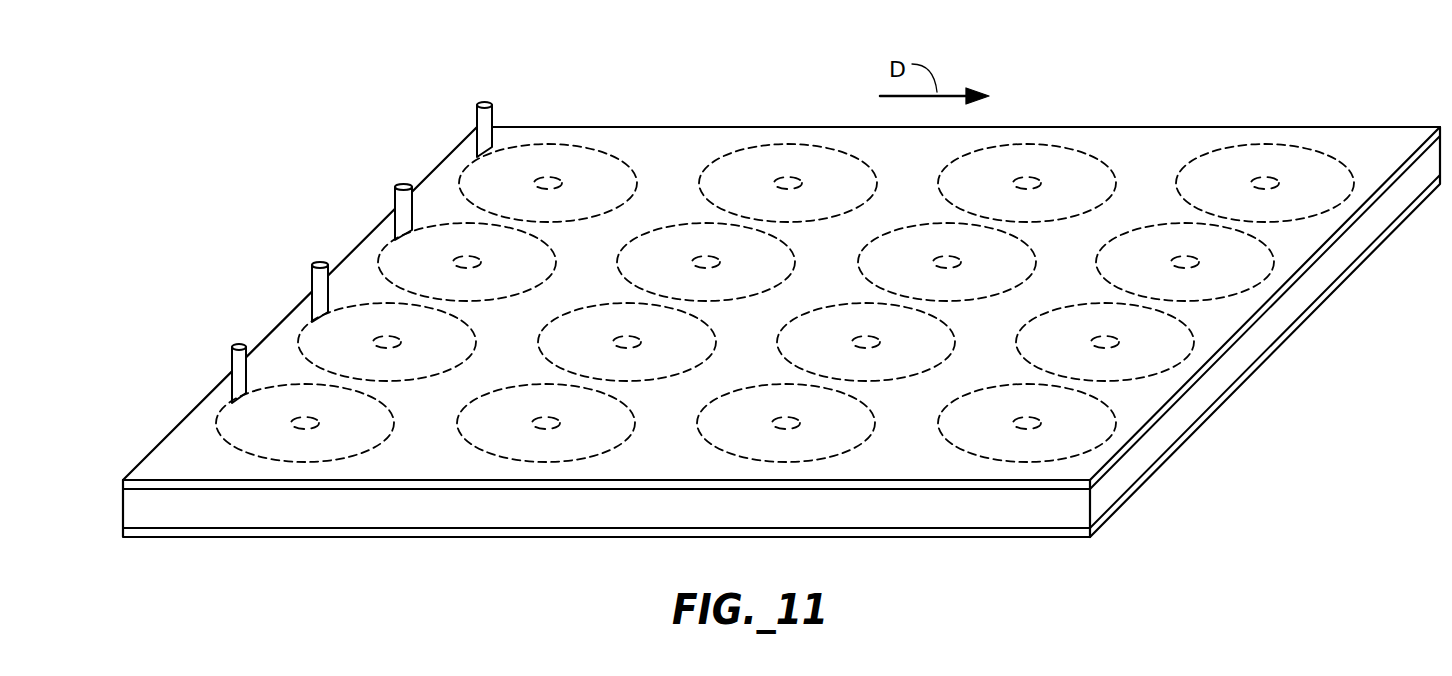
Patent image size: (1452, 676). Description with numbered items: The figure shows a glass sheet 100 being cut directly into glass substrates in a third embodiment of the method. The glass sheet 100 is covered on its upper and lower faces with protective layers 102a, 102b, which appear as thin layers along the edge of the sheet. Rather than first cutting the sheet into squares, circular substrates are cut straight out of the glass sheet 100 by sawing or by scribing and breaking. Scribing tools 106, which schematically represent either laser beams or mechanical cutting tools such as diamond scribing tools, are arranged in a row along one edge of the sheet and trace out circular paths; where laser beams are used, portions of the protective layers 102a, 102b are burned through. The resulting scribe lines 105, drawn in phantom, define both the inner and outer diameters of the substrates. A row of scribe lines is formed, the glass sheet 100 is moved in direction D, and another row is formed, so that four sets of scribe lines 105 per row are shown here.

The glass sheet 100 is at (1108, 488).
The protective layer 102a is at (943, 485).
The protective layer 102b is at (1035, 530).
The scribe lines 105 is at (789, 143).
The scribing tools 106 is at (483, 102).